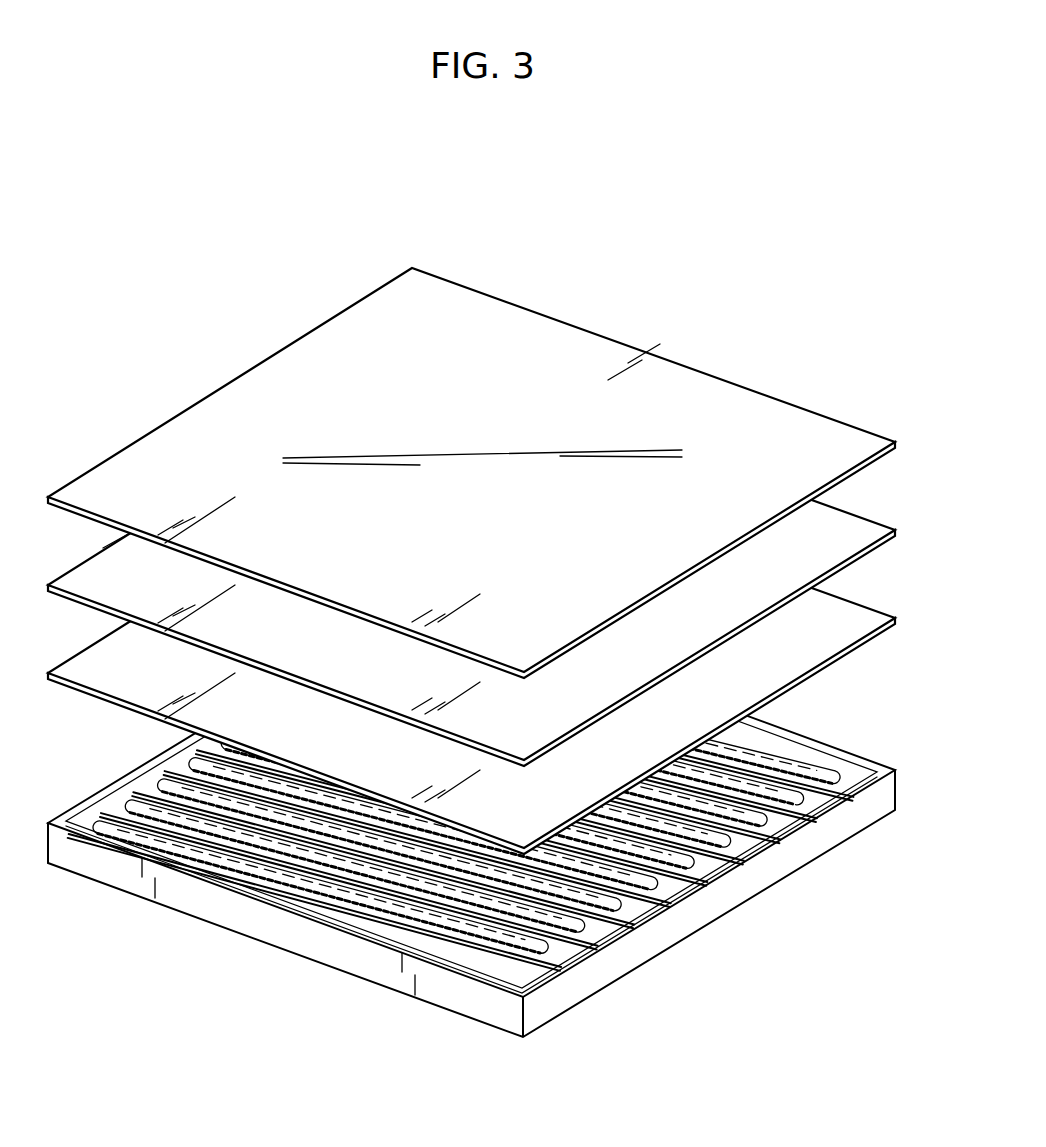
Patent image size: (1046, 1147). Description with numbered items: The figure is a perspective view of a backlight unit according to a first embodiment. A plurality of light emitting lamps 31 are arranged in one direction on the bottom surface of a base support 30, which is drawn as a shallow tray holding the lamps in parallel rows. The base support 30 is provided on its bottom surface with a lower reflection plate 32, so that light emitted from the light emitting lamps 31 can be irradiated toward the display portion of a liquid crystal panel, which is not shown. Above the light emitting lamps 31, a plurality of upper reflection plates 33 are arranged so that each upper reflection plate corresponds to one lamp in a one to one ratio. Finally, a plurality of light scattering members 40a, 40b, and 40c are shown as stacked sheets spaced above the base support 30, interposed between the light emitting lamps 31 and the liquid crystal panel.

The base support 30 is at (500, 1011).
The light emitting lamp 31 is at (302, 876).
The lower reflection plate 32 is at (450, 947).
The upper reflection plate 33 is at (423, 897).
The light scattering member 40a is at (841, 610).
The light scattering member 40b is at (841, 522).
The light scattering member 40c is at (841, 434).